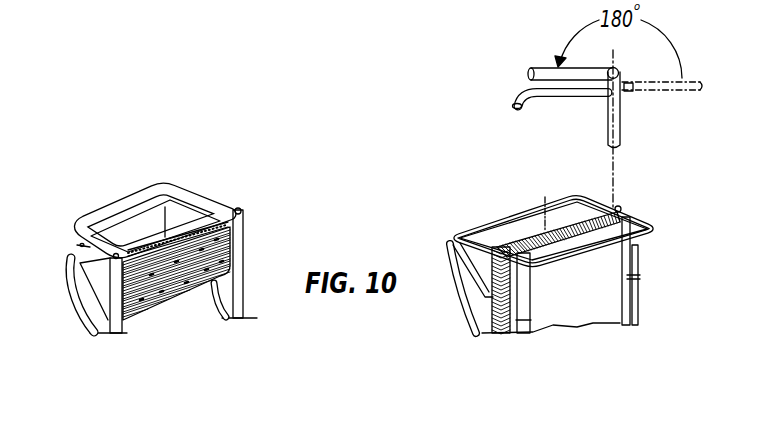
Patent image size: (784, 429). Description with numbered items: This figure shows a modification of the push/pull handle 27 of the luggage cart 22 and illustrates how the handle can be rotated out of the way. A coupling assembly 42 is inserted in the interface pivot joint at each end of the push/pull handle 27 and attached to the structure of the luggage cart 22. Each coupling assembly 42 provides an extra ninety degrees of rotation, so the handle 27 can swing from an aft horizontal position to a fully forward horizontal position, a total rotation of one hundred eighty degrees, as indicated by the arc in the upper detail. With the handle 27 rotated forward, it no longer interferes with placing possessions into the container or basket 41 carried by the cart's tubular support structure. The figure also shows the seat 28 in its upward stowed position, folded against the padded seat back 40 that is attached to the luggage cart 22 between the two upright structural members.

The luggage cart 22 is at (245, 272).
The push/pull handle 27 is at (90, 212).
The seat 28 is at (605, 297).
The padded seat back 40 is at (168, 294).
The container or basket 41 is at (172, 210).
The coupling assembly 42 is at (246, 210).